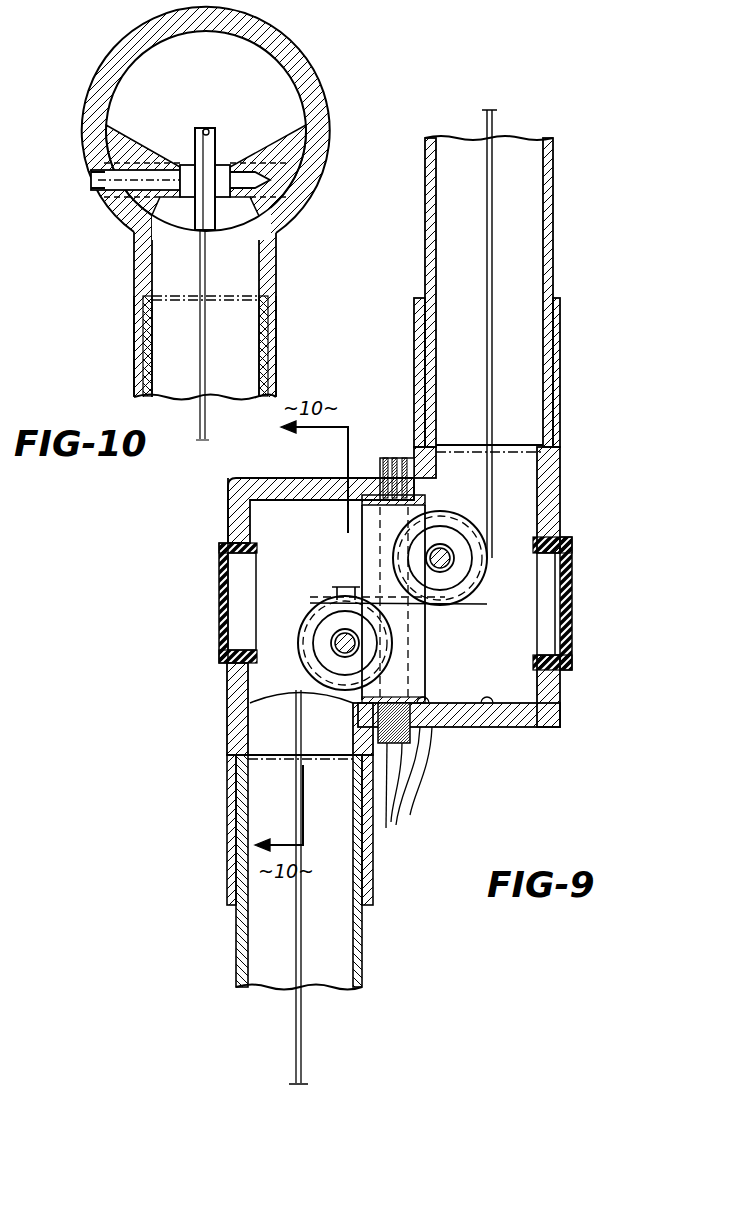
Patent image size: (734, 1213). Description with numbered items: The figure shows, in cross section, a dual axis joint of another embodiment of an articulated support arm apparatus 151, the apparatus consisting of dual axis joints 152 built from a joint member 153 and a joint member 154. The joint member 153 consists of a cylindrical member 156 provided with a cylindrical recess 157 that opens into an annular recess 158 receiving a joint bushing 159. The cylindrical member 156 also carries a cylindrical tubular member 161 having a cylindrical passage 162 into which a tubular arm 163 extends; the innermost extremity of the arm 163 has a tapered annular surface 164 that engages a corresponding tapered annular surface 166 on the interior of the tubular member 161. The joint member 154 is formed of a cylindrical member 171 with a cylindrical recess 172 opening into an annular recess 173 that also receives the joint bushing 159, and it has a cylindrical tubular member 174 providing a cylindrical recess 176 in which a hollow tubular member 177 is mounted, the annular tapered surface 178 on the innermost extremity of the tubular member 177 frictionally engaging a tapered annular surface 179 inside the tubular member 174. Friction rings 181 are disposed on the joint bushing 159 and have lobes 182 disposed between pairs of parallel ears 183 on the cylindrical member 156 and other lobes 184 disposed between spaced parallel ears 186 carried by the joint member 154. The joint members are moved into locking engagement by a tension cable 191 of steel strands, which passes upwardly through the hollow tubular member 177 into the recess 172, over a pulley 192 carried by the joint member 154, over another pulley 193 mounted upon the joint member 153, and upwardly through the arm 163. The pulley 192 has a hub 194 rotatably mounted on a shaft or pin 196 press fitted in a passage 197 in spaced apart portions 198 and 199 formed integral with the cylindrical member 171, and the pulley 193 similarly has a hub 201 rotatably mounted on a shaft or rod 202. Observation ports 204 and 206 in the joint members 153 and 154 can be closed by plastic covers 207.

In FIG. 9, the articulated support arm apparatus 151 is at (584, 158).
In FIG. 9, the dual axis joint 152 is at (368, 375).
In FIG. 9, the joint member 153 is at (583, 513).
In FIG. 9, the joint member 154 is at (216, 500).
In FIG. 9, the cylindrical member 156 is at (513, 717).
In FIG. 9, the cylindrical recess 157 is at (481, 726).
In FIG. 9, the annular recess 158 is at (413, 744).
In FIG. 9, the joint bushing 159 is at (375, 699).
In FIG. 9, the cylindrical tubular member 161 is at (557, 410).
In FIG. 9, the cylindrical passage 162 is at (558, 353).
In FIG. 9, the tubular arm 163 is at (553, 253).
In FIG. 9, the tapered annular surface 164 is at (549, 441).
In FIG. 9, the tapered annular surface 166 is at (548, 455).
In FIG. 10, the cylindrical member 171 is at (268, 40).
In FIG. 9, the cylindrical member 171 is at (294, 483).
In FIG. 9, the cylindrical recess 172 is at (243, 478).
In FIG. 9, the annular recess 173 is at (370, 511).
In FIG. 10, the cylindrical tubular member 174 is at (136, 322).
In FIG. 9, the cylindrical tubular member 174 is at (230, 804).
In FIG. 10, the cylindrical recess 176 is at (146, 340).
In FIG. 9, the cylindrical recess 176 is at (232, 839).
In FIG. 10, the hollow tubular member 177 is at (136, 384).
In FIG. 9, the hollow tubular member 177 is at (236, 968).
In FIG. 9, the annular tapered surface 178 is at (242, 769).
In FIG. 9, the tapered annular surface 179 is at (244, 756).
In FIG. 9, the friction ring 181 is at (381, 478).
In FIG. 9, the lobe 182 is at (403, 458).
In FIG. 9, the parallel ear 183 is at (379, 457).
In FIG. 9, the lobe 184 is at (389, 808).
In FIG. 9, the parallel ear 186 is at (418, 750).
In FIG. 10, the tension cable 191 is at (200, 374).
In FIG. 9, the tension cable 191 is at (300, 1052).
In FIG. 10, the pulley 192 is at (214, 130).
In FIG. 9, the pulley 192 is at (333, 594).
In FIG. 9, the pulley 193 is at (460, 578).
In FIG. 10, the hub 194 is at (188, 164).
In FIG. 9, the hub 194 is at (340, 653).
In FIG. 10, the shaft or pin 196 is at (128, 192).
In FIG. 9, the shaft or pin 196 is at (338, 639).
In FIG. 10, the passage 197 is at (92, 170).
In FIG. 10, the spaced apart portion 198 is at (112, 104).
In FIG. 10, the spaced apart portion 199 is at (292, 130).
In FIG. 9, the hub 201 is at (440, 552).
In FIG. 9, the shaft or rod 202 is at (450, 560).
In FIG. 9, the observation port 204 is at (558, 565).
In FIG. 9, the observation port 206 is at (221, 537).
In FIG. 9, the plastic cover 207 is at (220, 628).